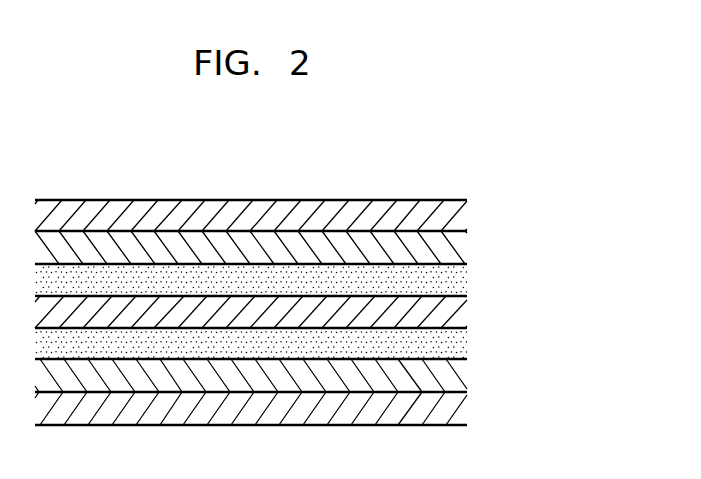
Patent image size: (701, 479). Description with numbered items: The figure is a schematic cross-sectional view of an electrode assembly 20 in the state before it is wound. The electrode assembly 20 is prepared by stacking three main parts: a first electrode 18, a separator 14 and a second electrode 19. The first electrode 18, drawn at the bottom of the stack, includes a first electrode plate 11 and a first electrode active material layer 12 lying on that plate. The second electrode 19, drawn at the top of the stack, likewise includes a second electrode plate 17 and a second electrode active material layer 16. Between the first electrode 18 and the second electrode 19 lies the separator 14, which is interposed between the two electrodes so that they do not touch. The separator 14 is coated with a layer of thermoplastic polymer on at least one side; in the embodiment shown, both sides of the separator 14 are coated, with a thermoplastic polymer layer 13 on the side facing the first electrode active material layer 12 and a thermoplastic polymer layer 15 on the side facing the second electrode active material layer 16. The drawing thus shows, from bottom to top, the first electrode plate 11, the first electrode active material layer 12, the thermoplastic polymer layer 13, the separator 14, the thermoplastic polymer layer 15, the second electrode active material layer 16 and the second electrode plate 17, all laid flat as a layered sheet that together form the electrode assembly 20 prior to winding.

The first electrode plate 11 is at (462, 408).
The first electrode active material layer 12 is at (462, 376).
The thermoplastic polymer layer 13 is at (462, 344).
The separator 14 is at (462, 313).
The thermoplastic polymer layer 15 is at (462, 280).
The second electrode active material layer 16 is at (460, 245).
The second electrode plate 17 is at (462, 217).
The first electrode 18 is at (552, 368).
The second electrode 19 is at (552, 207).
The electrode assembly 20 is at (493, 178).